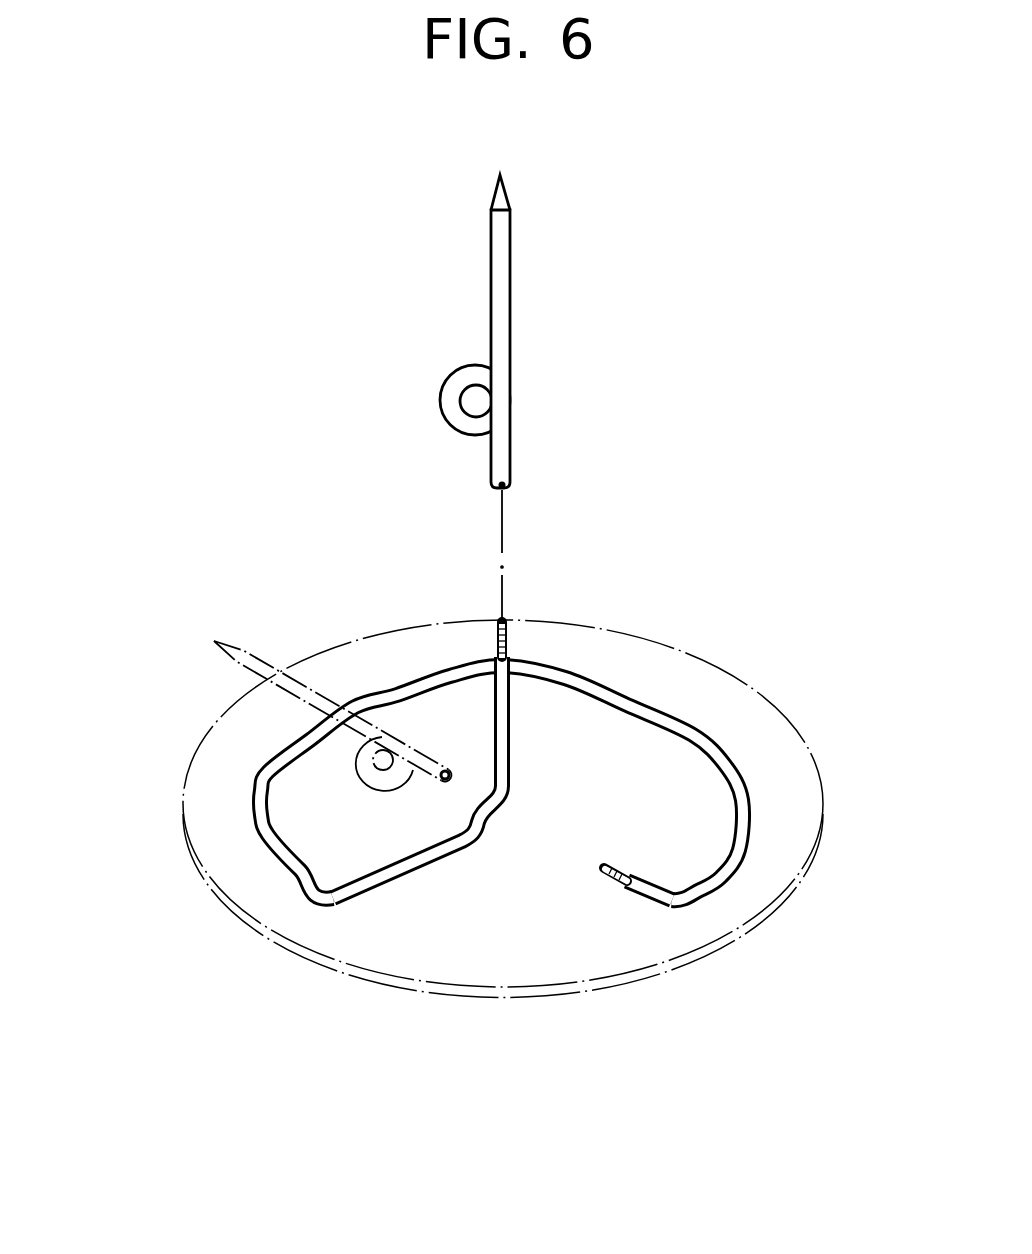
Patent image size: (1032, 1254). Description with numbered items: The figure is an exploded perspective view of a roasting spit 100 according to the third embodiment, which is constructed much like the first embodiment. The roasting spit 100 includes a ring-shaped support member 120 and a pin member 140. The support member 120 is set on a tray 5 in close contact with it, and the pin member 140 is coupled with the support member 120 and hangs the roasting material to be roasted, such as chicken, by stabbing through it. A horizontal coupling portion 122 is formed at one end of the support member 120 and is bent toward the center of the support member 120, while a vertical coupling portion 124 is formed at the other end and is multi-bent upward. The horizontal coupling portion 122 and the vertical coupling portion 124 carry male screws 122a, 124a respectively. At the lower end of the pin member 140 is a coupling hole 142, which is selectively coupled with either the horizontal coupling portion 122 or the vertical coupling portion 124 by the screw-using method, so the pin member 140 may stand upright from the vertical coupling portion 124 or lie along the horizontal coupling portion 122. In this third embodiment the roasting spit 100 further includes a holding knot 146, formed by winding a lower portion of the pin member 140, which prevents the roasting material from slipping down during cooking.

The tray 5 is at (797, 767).
The roasting spit 100 is at (388, 447).
The support member 120 is at (702, 733).
The horizontal coupling portion 122 is at (642, 897).
The male screw 122a is at (602, 875).
The vertical coupling portion 124 is at (492, 660).
The male screw 124a is at (505, 638).
The pin member 140 is at (364, 491).
The coupling hole 142 is at (503, 487).
The holding knot 146 is at (453, 383).